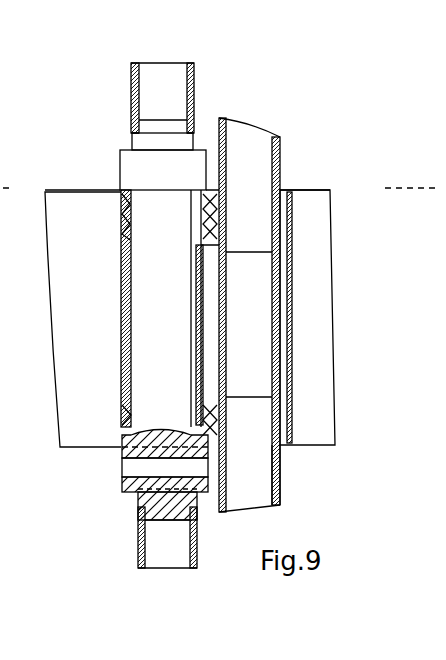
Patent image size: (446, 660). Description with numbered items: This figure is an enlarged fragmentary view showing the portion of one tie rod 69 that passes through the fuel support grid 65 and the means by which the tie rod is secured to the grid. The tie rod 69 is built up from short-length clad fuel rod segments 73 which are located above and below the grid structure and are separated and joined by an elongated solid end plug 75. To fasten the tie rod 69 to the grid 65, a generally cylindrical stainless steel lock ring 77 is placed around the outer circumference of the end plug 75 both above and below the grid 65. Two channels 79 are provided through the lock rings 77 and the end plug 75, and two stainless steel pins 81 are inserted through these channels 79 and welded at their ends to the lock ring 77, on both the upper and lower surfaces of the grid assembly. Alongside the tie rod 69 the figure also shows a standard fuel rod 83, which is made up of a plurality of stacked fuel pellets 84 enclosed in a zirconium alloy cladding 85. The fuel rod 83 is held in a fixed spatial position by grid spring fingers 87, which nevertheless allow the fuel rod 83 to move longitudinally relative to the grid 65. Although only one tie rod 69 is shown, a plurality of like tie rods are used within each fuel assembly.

The grid 65 is at (57, 294).
The tie rod 69 is at (67, 166).
The fuel rod segment 73 is at (174, 68).
The end plug 75 is at (142, 294).
The lock ring 77 is at (128, 157).
The channel 79 is at (200, 487).
The pin 81 is at (132, 470).
The fuel rod 83 is at (375, 420).
The fuel pellet 84 is at (238, 133).
The cladding 85 is at (283, 466).
The grid spring finger 87 is at (133, 237).